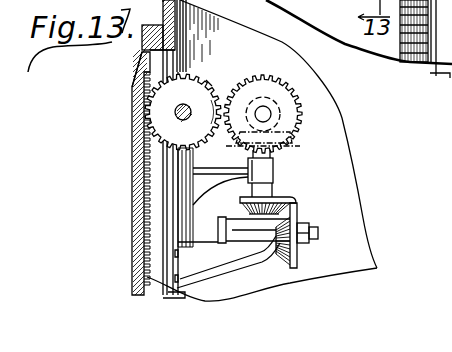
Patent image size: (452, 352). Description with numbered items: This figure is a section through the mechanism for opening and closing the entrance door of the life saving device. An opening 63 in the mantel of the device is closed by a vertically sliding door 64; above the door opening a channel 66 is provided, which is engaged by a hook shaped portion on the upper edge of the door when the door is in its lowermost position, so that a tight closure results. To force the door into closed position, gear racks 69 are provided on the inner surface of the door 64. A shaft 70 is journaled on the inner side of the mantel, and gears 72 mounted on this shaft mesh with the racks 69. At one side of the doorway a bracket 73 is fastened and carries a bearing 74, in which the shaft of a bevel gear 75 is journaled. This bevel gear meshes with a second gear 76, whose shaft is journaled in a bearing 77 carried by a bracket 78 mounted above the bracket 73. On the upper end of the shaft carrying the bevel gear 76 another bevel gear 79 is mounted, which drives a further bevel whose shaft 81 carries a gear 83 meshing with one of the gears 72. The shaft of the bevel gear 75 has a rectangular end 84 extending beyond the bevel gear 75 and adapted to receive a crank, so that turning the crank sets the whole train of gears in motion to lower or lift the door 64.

The openings 63 is at (175, 51).
The door 64 is at (126, 72).
The channel 66 is at (148, 6).
The gear racks 69 is at (132, 188).
The shaft 70 is at (177, 115).
The gears 72 is at (210, 82).
The bracket 73 is at (207, 272).
The bearing 74 is at (223, 223).
The bevel gear 75 is at (298, 256).
The bevel gear 76 is at (293, 198).
The bearing 77 is at (274, 165).
The bracket 78 is at (218, 166).
The bevel gear 79 is at (292, 131).
The shaft 81 is at (272, 114).
The gear 83 is at (300, 100).
The rectangular end 84 is at (318, 233).